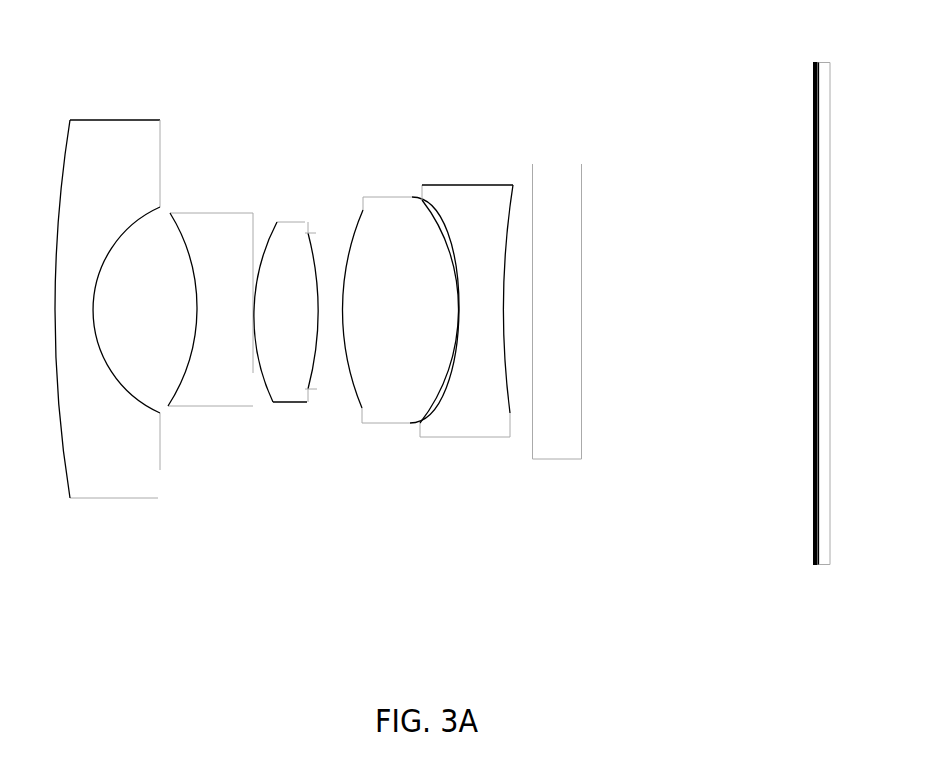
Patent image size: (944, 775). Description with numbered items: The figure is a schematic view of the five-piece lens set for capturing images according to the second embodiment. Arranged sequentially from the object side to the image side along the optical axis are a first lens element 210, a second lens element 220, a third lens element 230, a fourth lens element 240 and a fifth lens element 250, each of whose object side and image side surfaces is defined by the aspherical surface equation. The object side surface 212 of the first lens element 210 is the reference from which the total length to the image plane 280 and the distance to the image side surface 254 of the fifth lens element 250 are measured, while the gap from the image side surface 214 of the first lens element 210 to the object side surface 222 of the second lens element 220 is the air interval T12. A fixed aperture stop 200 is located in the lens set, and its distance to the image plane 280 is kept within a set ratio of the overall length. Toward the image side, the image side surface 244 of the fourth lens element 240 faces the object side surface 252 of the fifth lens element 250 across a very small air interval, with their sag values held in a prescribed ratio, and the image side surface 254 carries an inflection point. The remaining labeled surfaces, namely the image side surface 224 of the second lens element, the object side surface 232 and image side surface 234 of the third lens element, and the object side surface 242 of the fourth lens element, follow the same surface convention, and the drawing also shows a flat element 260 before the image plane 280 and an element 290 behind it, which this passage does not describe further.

The fixed aperture stop 200 is at (312, 228).
The first lens element 210 is at (90, 320).
The object side surface of the first lens element 212 is at (65, 448).
The image side surface of the first lens element 214 is at (140, 400).
The second lens element 220 is at (204, 320).
The object side surface of the second lens element 222 is at (187, 406).
The image-side surface of second lens element 224 is at (252, 373).
The third lens element 230 is at (305, 321).
The object-side surface of third lens element 232 is at (270, 392).
The image-side surface of third lens element 234 is at (317, 385).
The fourth lens element 240 is at (400, 322).
The object-side surface of fourth lens element 242 is at (360, 402).
The image side surface of the fourth lens element 244 is at (419, 424).
The fifth lens element 250 is at (490, 322).
The object side surface of the fifth lens element 252 is at (440, 392).
The image side surface of the fifth lens element 254 is at (508, 414).
The IR-cut filter 260 is at (565, 163).
The image plane 280 is at (815, 105).
The image sensor 290 is at (832, 113).